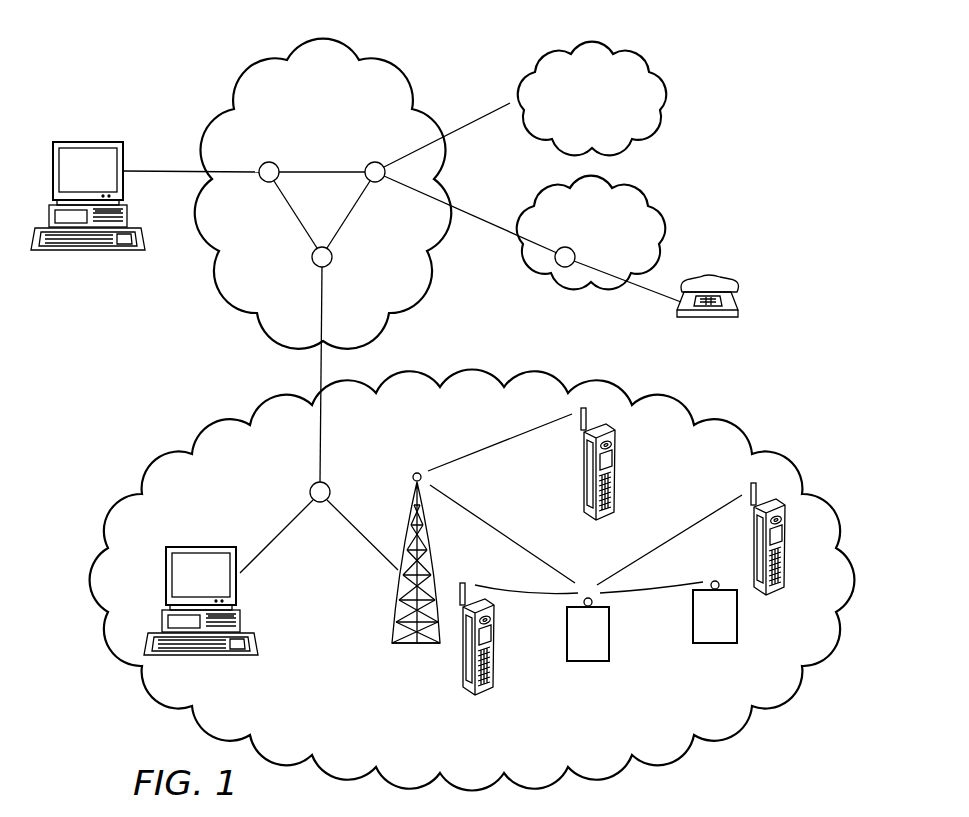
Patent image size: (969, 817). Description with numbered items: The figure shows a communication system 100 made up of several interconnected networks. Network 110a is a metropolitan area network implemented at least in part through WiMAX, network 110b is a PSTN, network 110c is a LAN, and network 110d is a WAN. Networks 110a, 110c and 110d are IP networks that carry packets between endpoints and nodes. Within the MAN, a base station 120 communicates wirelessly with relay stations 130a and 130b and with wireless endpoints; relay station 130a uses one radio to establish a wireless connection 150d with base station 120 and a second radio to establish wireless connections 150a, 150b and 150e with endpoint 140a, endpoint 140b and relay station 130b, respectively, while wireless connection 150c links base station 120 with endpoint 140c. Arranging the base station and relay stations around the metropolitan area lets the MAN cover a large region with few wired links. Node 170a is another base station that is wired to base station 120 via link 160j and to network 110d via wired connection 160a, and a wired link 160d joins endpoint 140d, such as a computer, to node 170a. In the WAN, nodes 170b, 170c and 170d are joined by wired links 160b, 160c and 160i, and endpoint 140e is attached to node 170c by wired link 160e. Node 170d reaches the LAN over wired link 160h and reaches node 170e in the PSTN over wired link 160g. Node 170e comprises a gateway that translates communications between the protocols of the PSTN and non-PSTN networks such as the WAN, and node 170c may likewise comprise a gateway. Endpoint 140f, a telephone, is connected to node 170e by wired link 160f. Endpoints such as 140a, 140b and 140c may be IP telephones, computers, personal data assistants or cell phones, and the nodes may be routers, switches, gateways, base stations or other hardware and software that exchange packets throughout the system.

The communication system 100 is at (818, 150).
The network 110a is at (218, 421).
The network 110b is at (558, 292).
The network 110c is at (674, 100).
The network 110d is at (248, 55).
The base station 120 is at (396, 611).
The relay station 130a is at (588, 664).
The relay station 130b is at (718, 645).
The endpoint 140a is at (456, 665).
The endpoint 140b is at (777, 594).
The endpoint 140c is at (622, 456).
The endpoint 140d is at (201, 546).
The endpoint 140e is at (89, 141).
The endpoint 140f is at (708, 272).
The wireless connection 150a is at (541, 596).
The wireless connection 150b is at (700, 516).
The wireless connection 150c is at (470, 456).
The wireless connection 150d is at (528, 548).
The wireless connection 150e is at (630, 597).
The wired connection 160a is at (323, 441).
The wired link 160b is at (293, 218).
The wired link 160c is at (353, 215).
The wired link 160d is at (281, 537).
The wired link 160e is at (174, 169).
The wired link 160f is at (652, 300).
The wired link 160g is at (472, 210).
The wired link 160h is at (470, 120).
The wired link 160i is at (332, 170).
The link 160j is at (356, 524).
The node 170a is at (309, 488).
The node 170b is at (336, 264).
The node 170c is at (268, 160).
The node 170d is at (377, 160).
The node 170e is at (568, 246).